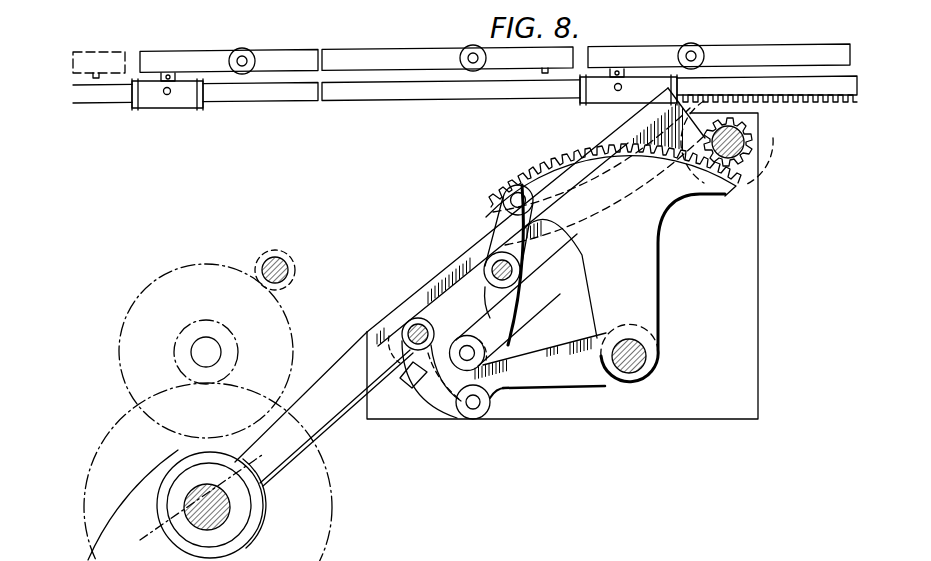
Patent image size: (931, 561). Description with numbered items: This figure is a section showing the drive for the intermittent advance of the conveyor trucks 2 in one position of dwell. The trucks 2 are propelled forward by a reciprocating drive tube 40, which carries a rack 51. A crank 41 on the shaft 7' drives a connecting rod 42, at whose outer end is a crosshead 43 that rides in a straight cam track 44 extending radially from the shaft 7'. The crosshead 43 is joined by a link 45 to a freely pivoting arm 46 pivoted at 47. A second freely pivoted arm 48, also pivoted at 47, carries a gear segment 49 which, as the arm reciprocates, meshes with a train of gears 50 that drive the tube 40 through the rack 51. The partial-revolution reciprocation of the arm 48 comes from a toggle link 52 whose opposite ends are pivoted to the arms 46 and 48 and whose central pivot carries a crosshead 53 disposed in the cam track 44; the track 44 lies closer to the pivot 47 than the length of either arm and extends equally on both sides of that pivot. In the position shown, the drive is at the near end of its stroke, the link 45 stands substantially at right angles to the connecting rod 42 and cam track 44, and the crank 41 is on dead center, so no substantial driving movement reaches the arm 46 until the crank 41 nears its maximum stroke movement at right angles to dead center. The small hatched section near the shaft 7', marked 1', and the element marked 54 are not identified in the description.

The conveyor trucks 2 is at (281, 51).
The reciprocating drive tube 40 is at (500, 95).
The rack 51 is at (827, 102).
The gear segment 49 is at (557, 158).
The train of gears 50 is at (751, 140).
The second freely pivoted arm 48 is at (660, 265).
The pivot 47 is at (632, 372).
The freely pivoting arm 46 is at (560, 387).
The link 45 is at (442, 393).
The cam track 44 is at (421, 305).
The crosshead 43 is at (403, 298).
The crosshead 53 is at (483, 262).
The cam 54 is at (527, 239).
The toggle link 52 is at (523, 285).
The connecting rod 42 is at (323, 390).
The crank 41 is at (134, 492).
The shaft 7' is at (224, 505).
The shaft 1' is at (283, 264).